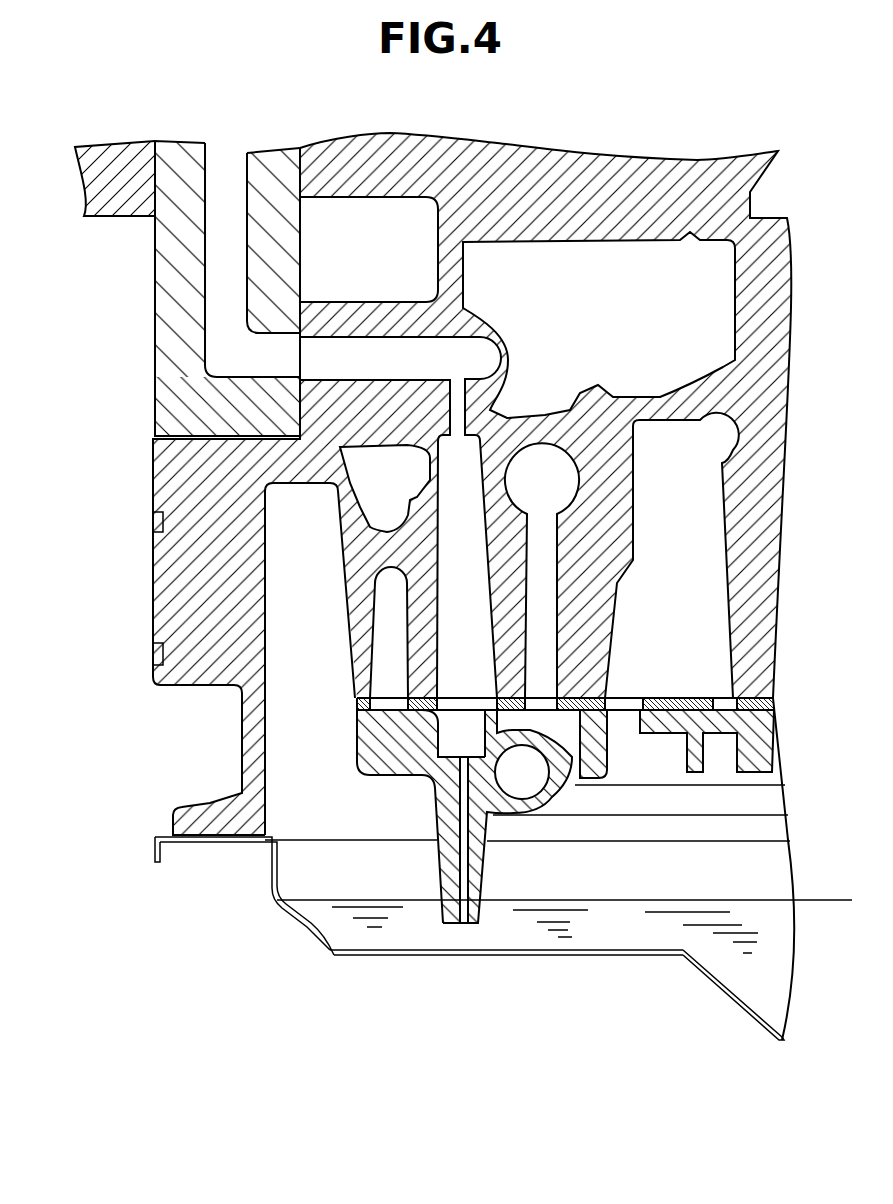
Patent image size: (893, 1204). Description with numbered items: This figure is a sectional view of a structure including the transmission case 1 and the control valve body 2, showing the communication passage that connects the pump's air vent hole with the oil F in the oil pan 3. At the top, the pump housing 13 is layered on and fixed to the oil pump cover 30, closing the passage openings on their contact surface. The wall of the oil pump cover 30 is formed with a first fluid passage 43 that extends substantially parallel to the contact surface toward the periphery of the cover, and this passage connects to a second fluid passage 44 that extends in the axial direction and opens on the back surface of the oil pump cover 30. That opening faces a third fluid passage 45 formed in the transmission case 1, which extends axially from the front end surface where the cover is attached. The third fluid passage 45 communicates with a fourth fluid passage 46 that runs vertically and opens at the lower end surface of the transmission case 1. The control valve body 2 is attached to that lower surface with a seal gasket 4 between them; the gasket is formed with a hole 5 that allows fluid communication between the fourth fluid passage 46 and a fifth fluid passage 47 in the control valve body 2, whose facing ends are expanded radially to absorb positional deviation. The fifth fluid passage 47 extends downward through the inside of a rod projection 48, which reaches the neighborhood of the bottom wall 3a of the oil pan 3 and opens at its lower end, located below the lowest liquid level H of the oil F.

The transmission case 1 is at (158, 592).
The control valve body 2 is at (363, 752).
The oil pan 3 is at (304, 935).
The bottom wall 3a is at (518, 958).
The seal gasket 4 is at (357, 702).
The hole 5 is at (449, 698).
The pump housing 13 is at (103, 218).
The oil pump cover 30 is at (163, 396).
The first fluid passage 43 is at (223, 187).
The second fluid passage 44 is at (277, 345).
The third fluid passage 45 is at (392, 353).
The fourth fluid passage 46 is at (463, 549).
The fifth fluid passage 47 is at (460, 810).
The rod projection 48 is at (472, 880).
The oil F is at (607, 915).
The lowest liquid level H is at (828, 900).